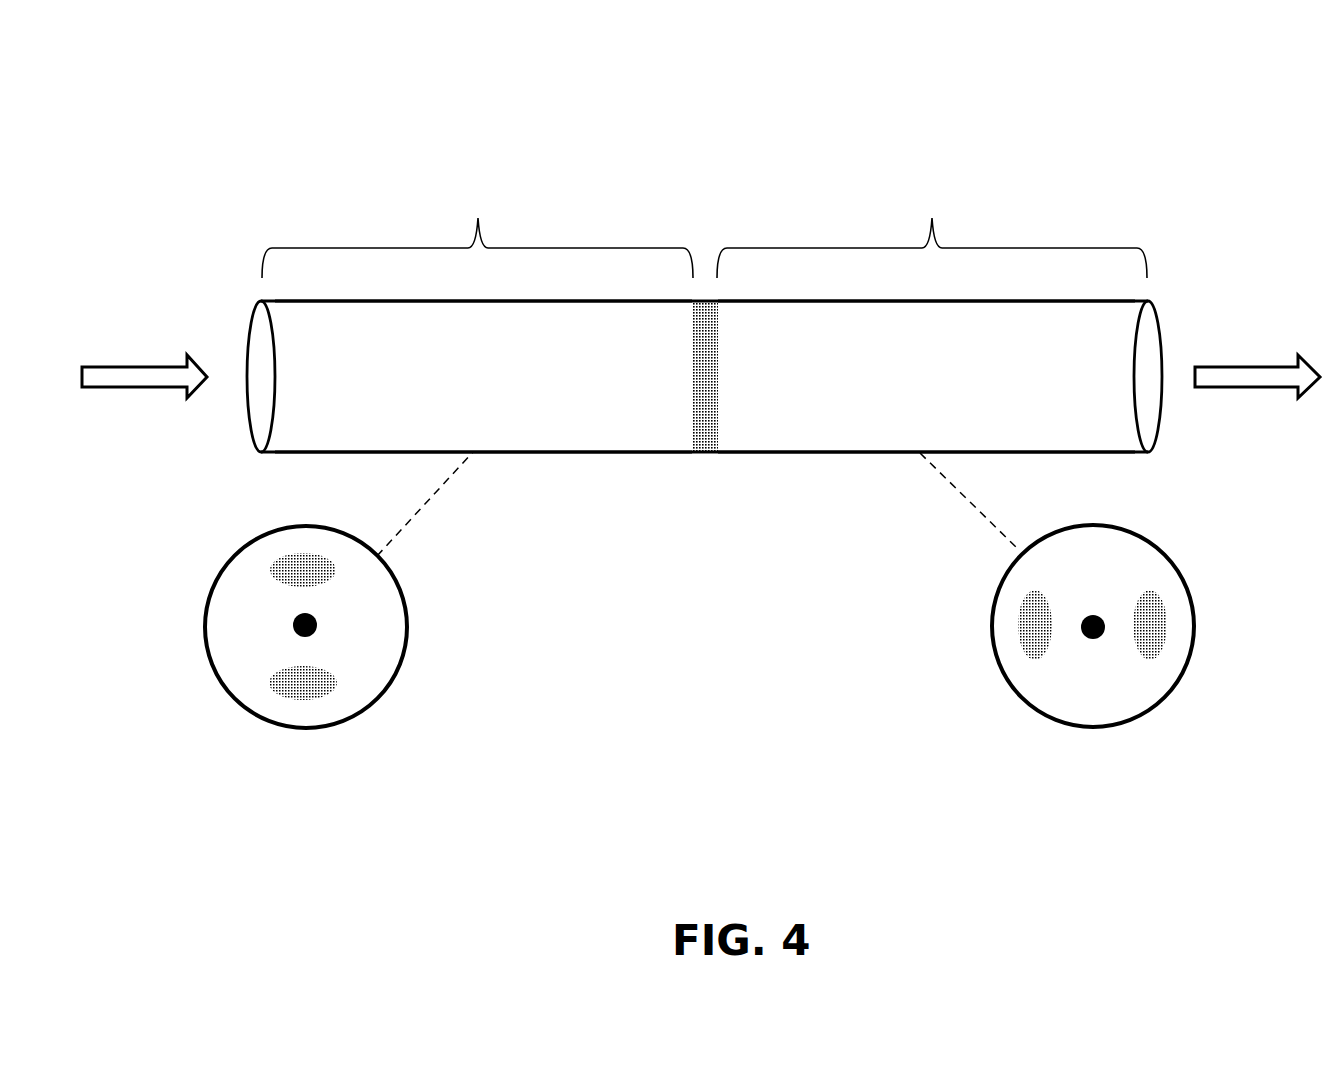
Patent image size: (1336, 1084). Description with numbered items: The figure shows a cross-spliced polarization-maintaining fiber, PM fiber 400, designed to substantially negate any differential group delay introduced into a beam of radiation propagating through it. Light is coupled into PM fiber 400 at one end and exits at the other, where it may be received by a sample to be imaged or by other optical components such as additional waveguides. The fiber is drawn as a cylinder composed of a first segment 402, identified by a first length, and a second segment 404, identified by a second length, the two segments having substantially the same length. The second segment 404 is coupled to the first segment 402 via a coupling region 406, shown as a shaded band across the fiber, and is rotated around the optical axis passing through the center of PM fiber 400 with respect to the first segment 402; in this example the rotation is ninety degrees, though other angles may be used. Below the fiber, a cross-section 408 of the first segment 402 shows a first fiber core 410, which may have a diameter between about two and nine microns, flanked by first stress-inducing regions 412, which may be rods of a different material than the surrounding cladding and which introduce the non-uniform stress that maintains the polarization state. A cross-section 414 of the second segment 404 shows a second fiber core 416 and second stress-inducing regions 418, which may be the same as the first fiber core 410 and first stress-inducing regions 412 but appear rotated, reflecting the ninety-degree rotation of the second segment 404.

The PM fiber 400 is at (262, 133).
The first segment 402 is at (517, 453).
The second segment 404 is at (760, 453).
The coupling region 406 is at (710, 453).
The cross-section 408 is at (390, 688).
The first fiber core 410 is at (320, 625).
The first stress-inducing regions 412 is at (333, 571).
The cross-section 414 is at (1183, 675).
The second fiber core 416 is at (1097, 640).
The second stress-inducing regions 418 is at (1037, 660).